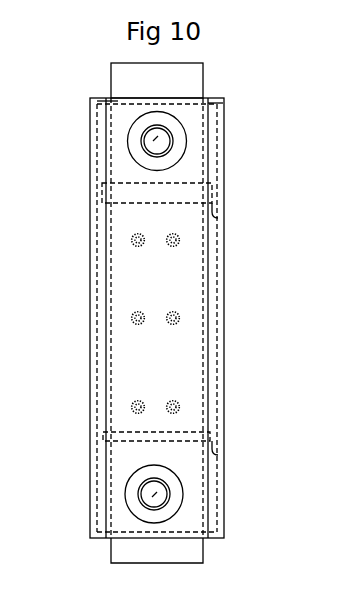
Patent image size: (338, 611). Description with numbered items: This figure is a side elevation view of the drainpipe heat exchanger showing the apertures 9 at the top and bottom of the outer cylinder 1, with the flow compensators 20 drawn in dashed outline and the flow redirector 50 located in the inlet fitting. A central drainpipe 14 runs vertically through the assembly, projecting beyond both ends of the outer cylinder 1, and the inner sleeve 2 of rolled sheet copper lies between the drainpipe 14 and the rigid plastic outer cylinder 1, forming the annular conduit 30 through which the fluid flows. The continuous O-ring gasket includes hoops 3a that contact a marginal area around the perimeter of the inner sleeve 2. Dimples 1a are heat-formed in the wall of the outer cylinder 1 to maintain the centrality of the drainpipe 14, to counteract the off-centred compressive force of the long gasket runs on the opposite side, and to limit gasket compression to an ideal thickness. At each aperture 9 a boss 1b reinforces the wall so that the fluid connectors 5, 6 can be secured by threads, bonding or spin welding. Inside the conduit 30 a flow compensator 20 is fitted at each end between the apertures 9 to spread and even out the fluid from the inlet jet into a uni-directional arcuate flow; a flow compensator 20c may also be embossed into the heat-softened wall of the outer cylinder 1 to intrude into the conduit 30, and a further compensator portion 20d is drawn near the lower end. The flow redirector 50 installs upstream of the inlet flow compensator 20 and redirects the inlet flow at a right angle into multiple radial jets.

The outer cylinder 1 is at (89, 193).
The dimples 1a is at (131, 239).
The boss 1b is at (133, 143).
The inner sleeve 2 is at (105, 273).
The hoops 3a is at (90, 104).
The fluid connector 5 is at (167, 493).
The fluid connector 6 is at (152, 143).
The apertures 9 is at (153, 141).
The drainpipe 14 is at (115, 73).
The flow compensator 20 is at (213, 197).
The flow compensator 20c is at (228, 218).
The lower clamp portion 20d is at (188, 436).
The conduit 30 is at (210, 305).
The flow redirector 50 is at (156, 127).